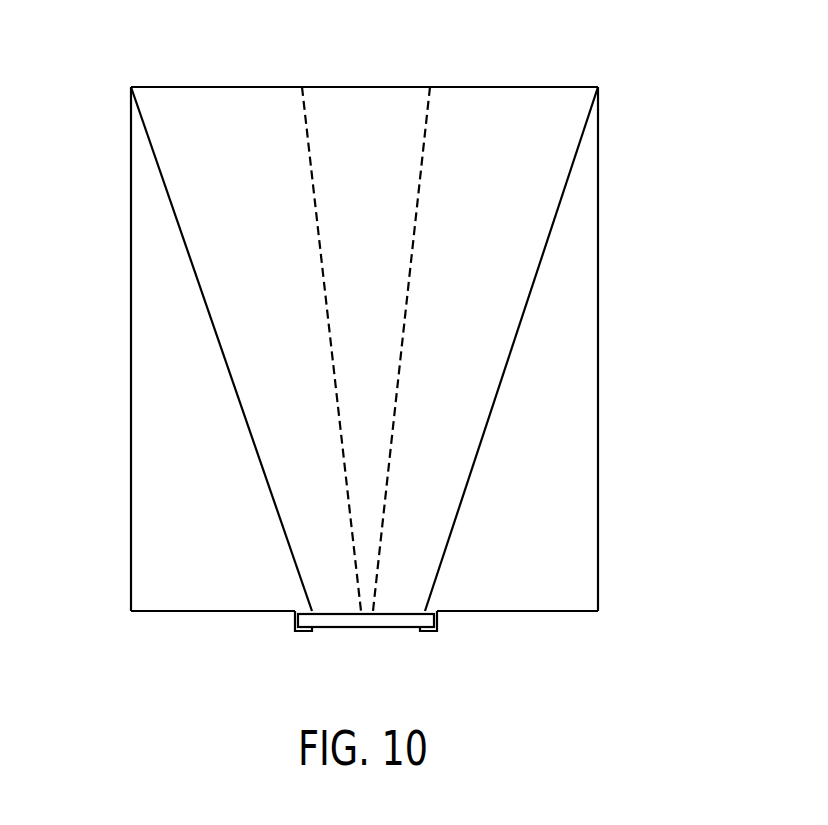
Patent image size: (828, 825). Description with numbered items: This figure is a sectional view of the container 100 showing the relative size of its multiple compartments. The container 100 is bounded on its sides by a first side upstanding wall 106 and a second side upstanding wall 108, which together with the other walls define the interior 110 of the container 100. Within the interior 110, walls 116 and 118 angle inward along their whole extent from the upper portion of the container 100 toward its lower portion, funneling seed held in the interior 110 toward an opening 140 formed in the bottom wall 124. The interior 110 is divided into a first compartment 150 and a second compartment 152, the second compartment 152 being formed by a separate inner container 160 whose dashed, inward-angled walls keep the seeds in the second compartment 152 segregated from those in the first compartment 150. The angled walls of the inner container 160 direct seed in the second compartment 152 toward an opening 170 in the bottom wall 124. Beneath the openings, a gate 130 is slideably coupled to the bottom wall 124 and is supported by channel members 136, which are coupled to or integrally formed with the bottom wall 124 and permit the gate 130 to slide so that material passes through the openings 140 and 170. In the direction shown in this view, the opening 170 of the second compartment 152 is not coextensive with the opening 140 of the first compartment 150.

The container 100 is at (376, 364).
The first side upstanding wall 106 is at (598, 357).
The second side upstanding wall 108 is at (131, 348).
The interior 110 is at (547, 113).
The angled wall 116 is at (513, 339).
The angled wall 118 is at (220, 343).
The bottom wall 124 is at (566, 624).
The gate 130 is at (386, 636).
The channel members 136 is at (294, 619).
The opening 140 is at (317, 603).
The first compartment 150 is at (269, 242).
The second compartment 152 is at (405, 349).
The container 160 is at (436, 132).
The opening 170 is at (366, 595).